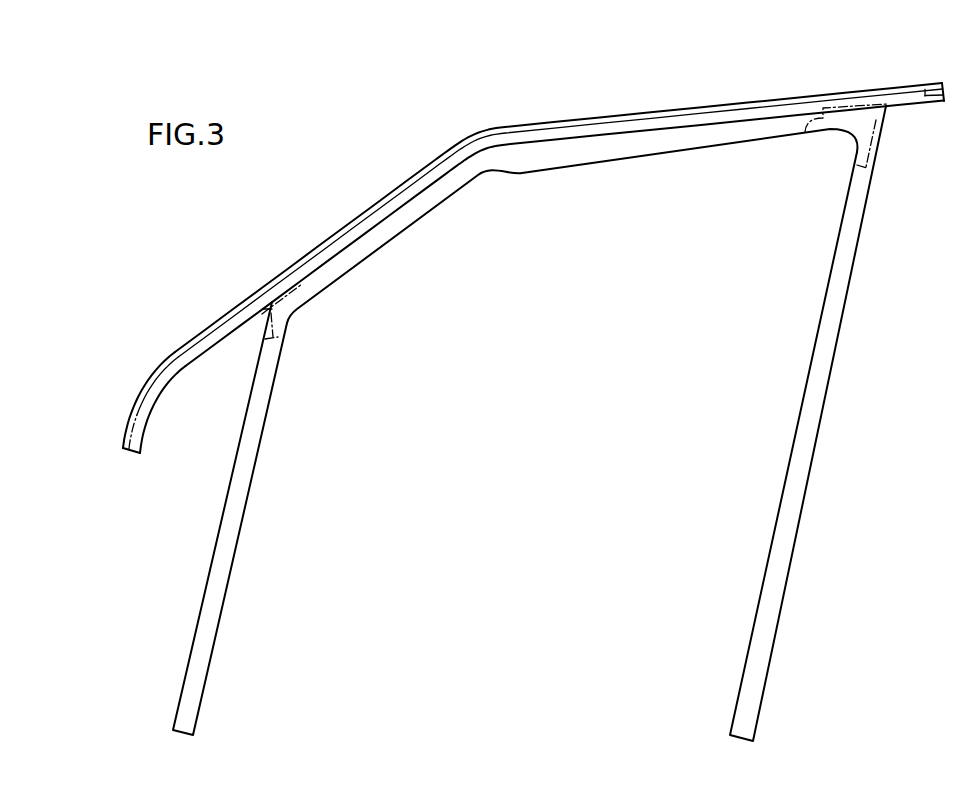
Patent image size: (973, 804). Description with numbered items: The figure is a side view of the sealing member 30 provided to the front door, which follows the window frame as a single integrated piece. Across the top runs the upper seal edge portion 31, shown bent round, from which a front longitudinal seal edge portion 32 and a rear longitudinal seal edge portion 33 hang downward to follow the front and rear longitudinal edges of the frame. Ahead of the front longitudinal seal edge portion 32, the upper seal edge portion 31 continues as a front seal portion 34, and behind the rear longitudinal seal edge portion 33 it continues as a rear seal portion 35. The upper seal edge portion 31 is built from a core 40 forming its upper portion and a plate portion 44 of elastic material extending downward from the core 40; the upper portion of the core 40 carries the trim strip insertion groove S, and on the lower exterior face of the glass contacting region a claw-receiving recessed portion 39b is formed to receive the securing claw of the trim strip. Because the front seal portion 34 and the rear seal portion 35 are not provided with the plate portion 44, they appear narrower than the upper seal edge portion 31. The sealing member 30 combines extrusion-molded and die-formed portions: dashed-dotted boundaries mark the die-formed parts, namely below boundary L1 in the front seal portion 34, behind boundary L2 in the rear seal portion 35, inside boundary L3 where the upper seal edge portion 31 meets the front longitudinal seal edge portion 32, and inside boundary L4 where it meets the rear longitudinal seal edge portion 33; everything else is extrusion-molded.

The sealing member 30 is at (581, 94).
The upper seal edge portion 31 is at (683, 128).
The front longitudinal seal edge portion 32 is at (205, 617).
The rear longitudinal seal edge portion 33 is at (793, 505).
The front seal portion 34 is at (148, 381).
The rear seal portion 35 is at (933, 86).
The core 40 is at (518, 138).
The claw-receiving recessed portion 39b is at (553, 140).
The plate portion 44 is at (498, 166).
The trim strip insertion groove S is at (393, 193).
The boundary L1 is at (132, 410).
The boundary L2 is at (912, 105).
The boundary L3 is at (302, 284).
The boundary L4 is at (805, 132).